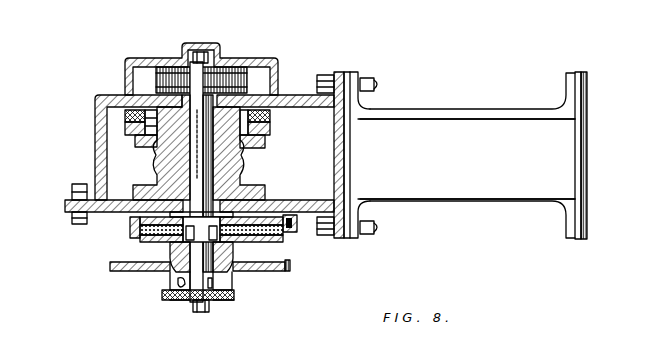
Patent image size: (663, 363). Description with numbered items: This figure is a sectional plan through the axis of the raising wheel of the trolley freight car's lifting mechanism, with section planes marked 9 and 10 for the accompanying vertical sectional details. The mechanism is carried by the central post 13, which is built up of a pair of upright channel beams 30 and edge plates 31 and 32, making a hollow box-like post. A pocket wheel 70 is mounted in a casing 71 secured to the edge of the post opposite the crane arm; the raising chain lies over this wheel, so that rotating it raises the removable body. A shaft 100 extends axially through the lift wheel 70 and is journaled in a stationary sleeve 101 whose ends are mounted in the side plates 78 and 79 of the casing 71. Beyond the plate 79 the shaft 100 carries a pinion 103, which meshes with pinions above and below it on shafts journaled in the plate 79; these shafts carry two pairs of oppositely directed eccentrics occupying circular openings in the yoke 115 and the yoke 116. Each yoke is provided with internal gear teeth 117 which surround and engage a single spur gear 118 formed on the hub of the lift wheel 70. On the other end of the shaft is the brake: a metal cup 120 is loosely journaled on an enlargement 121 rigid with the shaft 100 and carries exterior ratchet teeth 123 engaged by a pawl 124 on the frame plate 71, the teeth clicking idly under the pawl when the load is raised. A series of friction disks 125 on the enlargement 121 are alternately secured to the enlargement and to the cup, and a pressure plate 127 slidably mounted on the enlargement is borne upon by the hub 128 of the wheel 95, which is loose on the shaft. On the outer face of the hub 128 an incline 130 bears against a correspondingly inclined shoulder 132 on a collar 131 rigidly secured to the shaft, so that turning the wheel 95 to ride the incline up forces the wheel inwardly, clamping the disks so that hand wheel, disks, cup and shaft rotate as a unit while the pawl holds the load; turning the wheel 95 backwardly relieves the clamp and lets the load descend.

The section line 9— 9 is at (125, 67).
The section line 10— 10 is at (95, 106).
The central post 13 is at (504, 198).
The upright channel beams 30 is at (500, 108).
The edge plate 31 is at (587, 158).
The edge plate 32 is at (350, 165).
The pocket wheel 70 is at (242, 158).
The casing 71 is at (316, 204).
The side plate 78 is at (82, 224).
The side plate 79 is at (100, 99).
The wheel 95 is at (282, 271).
The shaft 100 is at (193, 163).
The stationary sleeve 101 is at (165, 143).
The pinion 103 is at (228, 84).
The yoke 115 is at (125, 129).
The yoke 116 is at (125, 115).
The internal gear teeth 117 is at (270, 120).
The spur gear 118 is at (262, 144).
The metal cup 120 is at (132, 230).
The enlargement 121 is at (201, 227).
The ratchet teeth 123 is at (290, 233).
The pawl 124 is at (326, 236).
The friction disks 125 is at (258, 242).
The pressure plate 127 is at (170, 248).
The hub 128 is at (218, 248).
The incline 130 is at (190, 286).
The collar 131 is at (226, 296).
The inclined shoulder 132 is at (176, 302).